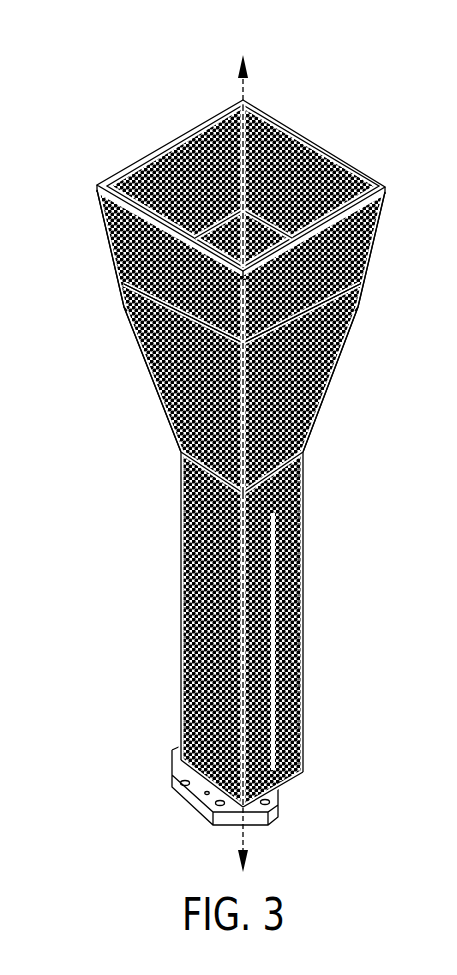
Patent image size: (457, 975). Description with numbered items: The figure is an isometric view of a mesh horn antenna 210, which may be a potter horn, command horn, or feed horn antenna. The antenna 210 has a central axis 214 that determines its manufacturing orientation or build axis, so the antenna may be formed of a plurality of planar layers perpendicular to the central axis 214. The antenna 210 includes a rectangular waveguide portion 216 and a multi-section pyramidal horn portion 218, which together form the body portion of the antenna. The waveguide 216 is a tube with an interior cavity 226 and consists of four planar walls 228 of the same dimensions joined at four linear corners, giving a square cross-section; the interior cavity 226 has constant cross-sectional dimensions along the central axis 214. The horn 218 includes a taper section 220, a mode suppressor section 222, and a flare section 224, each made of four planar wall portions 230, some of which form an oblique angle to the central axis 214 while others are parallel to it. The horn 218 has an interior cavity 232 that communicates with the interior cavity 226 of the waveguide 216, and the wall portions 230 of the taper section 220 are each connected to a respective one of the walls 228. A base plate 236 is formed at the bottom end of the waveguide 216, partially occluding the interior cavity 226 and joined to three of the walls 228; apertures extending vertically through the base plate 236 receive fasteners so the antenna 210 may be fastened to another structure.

The antenna 210 is at (236, 441).
The central axis 214 is at (246, 91).
The rectangular waveguide portion 216 is at (240, 661).
The multi-section pyramidal horn portion 218 is at (236, 282).
The taper section 220 is at (327, 392).
The mode suppressor section 222 is at (362, 296).
The flare section 224 is at (368, 248).
The interior cavity 226 is at (299, 798).
The planar walls 228 is at (183, 623).
The planar wall portions 230 is at (185, 140).
The interior cavity 232 is at (313, 140).
The base plate 236 is at (188, 800).